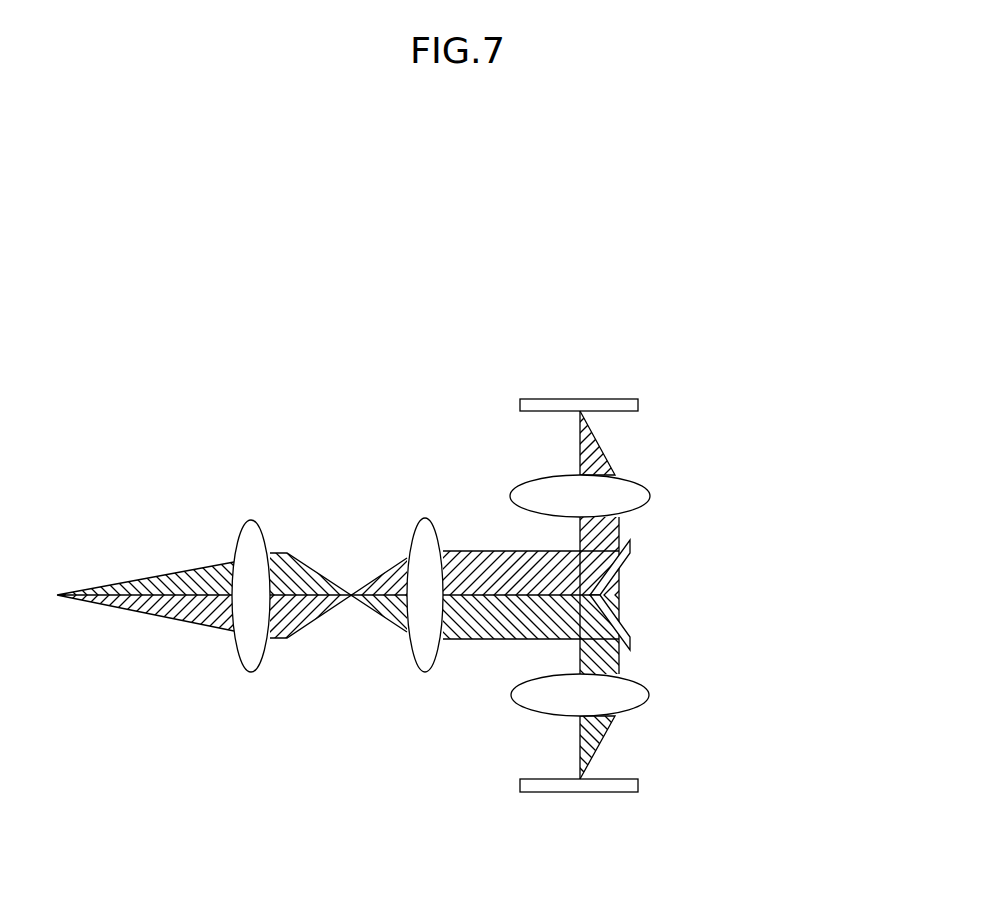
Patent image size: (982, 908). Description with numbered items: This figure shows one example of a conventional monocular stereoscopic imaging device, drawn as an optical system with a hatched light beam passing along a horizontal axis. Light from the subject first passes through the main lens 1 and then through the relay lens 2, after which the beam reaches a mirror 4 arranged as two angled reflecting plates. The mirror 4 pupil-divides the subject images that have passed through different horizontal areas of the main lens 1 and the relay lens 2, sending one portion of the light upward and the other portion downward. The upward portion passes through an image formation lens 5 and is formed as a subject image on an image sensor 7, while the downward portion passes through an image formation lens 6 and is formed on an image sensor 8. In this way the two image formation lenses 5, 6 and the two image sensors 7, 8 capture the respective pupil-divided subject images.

The main lens 1 is at (252, 664).
The relay lens 2 is at (423, 663).
The mirror 4 is at (627, 553).
The image formation lens 5 is at (620, 482).
The image formation lens 6 is at (618, 700).
The image sensor 7 is at (604, 399).
The image sensor 8 is at (604, 793).